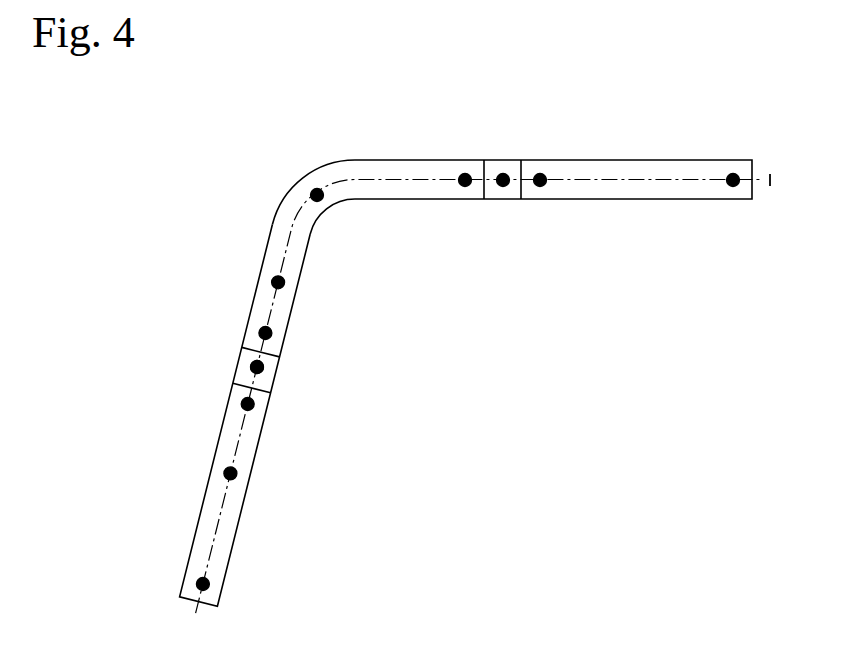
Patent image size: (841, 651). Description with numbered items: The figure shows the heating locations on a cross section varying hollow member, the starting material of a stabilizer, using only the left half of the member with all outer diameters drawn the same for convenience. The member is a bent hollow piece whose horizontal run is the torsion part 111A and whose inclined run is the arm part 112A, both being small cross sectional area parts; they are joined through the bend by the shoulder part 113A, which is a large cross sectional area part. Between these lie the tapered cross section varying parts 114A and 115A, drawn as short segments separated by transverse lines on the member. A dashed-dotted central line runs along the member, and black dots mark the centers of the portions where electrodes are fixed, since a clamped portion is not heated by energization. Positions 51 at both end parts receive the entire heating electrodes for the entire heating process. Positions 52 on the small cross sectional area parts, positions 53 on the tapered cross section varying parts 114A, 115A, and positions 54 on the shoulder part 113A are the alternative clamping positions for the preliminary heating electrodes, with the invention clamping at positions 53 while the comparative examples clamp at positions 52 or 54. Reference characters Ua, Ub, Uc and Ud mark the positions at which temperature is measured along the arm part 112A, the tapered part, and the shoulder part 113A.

The end part electrode position 51 is at (733, 176).
The small cross sectional area part electrode position 52 is at (542, 176).
The tapered part electrode position 53 is at (507, 176).
The large cross sectional area part electrode position 54 is at (466, 176).
The torsion part 111A is at (618, 160).
The arm part 112A is at (220, 438).
The shoulder part 113A is at (306, 173).
The cross section varying part 114A is at (492, 160).
The cross section varying part 115A is at (242, 348).
The temperature measuring position Ua is at (234, 473).
The temperature measuring position Ub is at (261, 367).
The temperature measuring position Uc is at (282, 282).
The temperature measuring position Ud is at (320, 199).